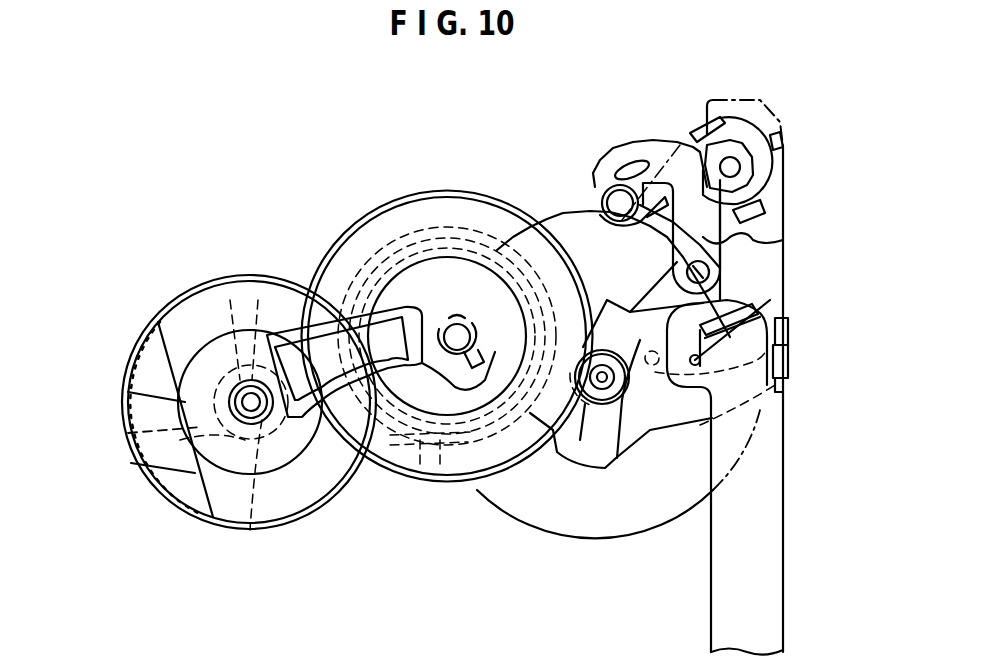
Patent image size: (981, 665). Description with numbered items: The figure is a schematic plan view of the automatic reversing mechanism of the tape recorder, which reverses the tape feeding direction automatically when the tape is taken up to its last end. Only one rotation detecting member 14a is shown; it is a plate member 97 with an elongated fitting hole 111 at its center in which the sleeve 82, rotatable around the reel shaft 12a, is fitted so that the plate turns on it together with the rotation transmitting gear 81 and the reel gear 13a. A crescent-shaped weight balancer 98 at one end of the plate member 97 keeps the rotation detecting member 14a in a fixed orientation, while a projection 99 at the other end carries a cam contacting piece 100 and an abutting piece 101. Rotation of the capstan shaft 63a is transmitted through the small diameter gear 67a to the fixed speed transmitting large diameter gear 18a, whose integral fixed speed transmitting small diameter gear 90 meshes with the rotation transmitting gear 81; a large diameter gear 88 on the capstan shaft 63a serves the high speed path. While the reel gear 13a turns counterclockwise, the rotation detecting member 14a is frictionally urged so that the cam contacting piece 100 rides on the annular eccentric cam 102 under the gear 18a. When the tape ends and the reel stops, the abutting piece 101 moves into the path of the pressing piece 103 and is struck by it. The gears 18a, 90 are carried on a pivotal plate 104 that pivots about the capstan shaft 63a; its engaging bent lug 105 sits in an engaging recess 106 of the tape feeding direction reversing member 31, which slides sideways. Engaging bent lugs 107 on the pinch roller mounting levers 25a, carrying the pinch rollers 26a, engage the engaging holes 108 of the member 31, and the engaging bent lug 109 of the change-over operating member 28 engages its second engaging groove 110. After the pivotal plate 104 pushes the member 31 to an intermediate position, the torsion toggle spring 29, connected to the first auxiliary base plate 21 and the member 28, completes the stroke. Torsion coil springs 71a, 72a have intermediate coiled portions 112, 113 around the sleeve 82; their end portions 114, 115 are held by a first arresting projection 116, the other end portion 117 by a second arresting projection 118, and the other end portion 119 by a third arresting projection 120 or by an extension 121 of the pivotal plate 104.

The reel shaft 12a is at (243, 436).
The reel gear 13a is at (381, 362).
The rotation detecting member 14a is at (235, 492).
The fixed speed transmitting large diameter gear 18a is at (357, 220).
The first auxiliary base plate 21 is at (620, 160).
The pinch roller mounting lever 25a is at (705, 298).
The pinch roller 26a is at (645, 305).
The change-over operating member 28 is at (693, 128).
The torsion toggle spring 29 is at (603, 200).
The tape feeding direction reversing member 31 is at (784, 462).
The capstan shaft 63a is at (598, 406).
The small diameter gear 67a is at (655, 422).
The torsion coil spring 71a is at (250, 522).
The torsion coil spring 72a is at (320, 480).
The rotation transmitting gear 81 is at (334, 308).
The sleeve 82 is at (226, 398).
The large diameter gear 88 is at (600, 540).
The fixed speed transmitting small diameter gear 90 is at (426, 232).
The plate member 97 is at (268, 442).
The weight balancer 98 is at (171, 477).
The projection 99 is at (418, 312).
The cam contacting piece 100 is at (447, 420).
The abutting piece 101 is at (461, 360).
The annular eccentric cam 102 is at (474, 338).
The pressing piece 103 is at (463, 316).
The pivotal plate 104 is at (683, 420).
The engaging bent lug 105 is at (789, 355).
The engaging recess 106 is at (790, 330).
The engaging bent lug 107 is at (770, 300).
The engaging hole 108 is at (784, 383).
The engaging bent lug 109 is at (784, 150).
The second engaging groove 110 is at (775, 138).
The elongated fitting hole 111 is at (268, 348).
The intermediate coiled portion 112 is at (210, 430).
The intermediate coiled portion 113 is at (342, 440).
The one end portion 114 is at (210, 320).
The one end portion 115 is at (258, 300).
The first arresting projection 116 is at (212, 282).
The other end portion 117 is at (268, 470).
The second arresting projection 118 is at (305, 455).
The other end portion 119 is at (367, 473).
The third arresting projection 120 is at (345, 452).
The extension 121 is at (413, 457).